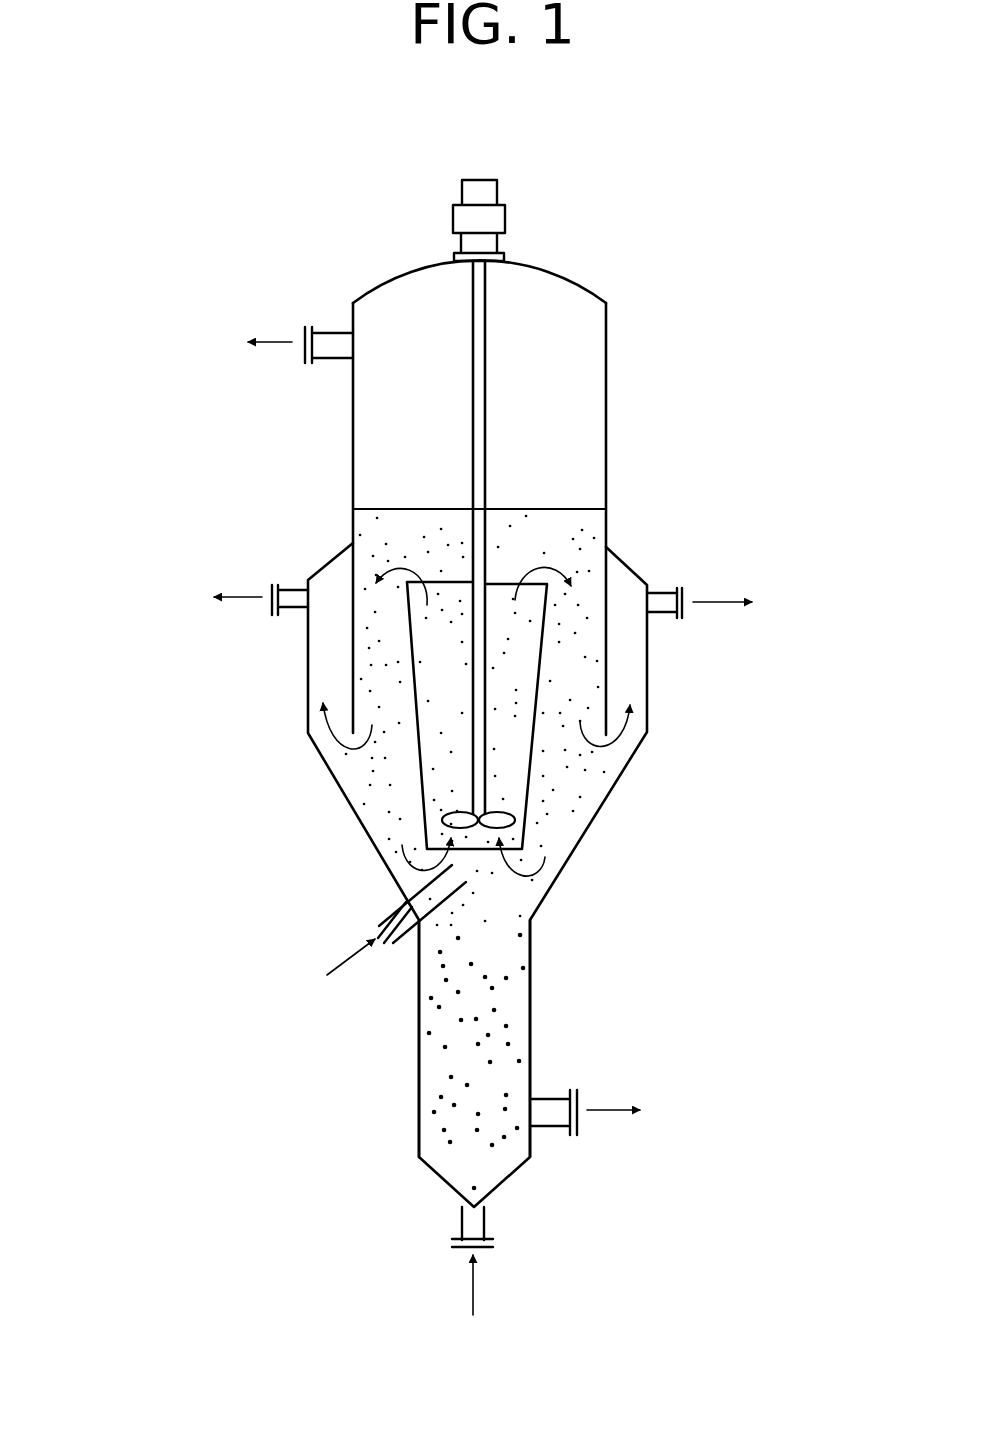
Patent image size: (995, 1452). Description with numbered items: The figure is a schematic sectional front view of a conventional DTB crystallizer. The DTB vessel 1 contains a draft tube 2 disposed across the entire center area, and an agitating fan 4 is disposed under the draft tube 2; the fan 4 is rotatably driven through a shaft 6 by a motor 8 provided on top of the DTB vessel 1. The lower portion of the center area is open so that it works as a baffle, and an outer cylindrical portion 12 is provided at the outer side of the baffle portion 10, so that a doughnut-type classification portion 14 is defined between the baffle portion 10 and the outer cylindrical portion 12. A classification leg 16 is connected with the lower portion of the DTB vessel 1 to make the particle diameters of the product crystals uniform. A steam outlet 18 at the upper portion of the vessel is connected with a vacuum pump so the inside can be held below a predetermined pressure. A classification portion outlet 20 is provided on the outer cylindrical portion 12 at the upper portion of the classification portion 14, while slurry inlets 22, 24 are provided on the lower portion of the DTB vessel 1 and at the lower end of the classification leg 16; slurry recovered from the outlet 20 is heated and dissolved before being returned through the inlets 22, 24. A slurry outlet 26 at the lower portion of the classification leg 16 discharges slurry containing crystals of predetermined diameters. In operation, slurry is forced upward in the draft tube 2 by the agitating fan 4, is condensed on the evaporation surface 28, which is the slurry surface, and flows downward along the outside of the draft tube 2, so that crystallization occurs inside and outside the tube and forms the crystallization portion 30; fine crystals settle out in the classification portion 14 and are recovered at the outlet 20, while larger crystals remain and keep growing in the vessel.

The DTB vessel 1 is at (615, 413).
The draft tube 2 is at (533, 760).
The agitating fan 4 is at (501, 822).
The shaft 6 is at (480, 382).
The motor 8 is at (462, 220).
The baffle portion 10 is at (349, 643).
The outer cylindrical portion 12 is at (307, 675).
The doughnut-type classification portion 14 is at (332, 684).
The classification leg 16 is at (418, 1077).
The steam outlet 18 is at (333, 358).
The classification portion outlet 20 is at (297, 590).
The slurry inlet 22 is at (396, 903).
The slurry inlet 24 is at (486, 1217).
The slurry outlet 26 is at (547, 1102).
The evaporation surface 28 is at (548, 510).
The crystallization portion 30 is at (575, 680).